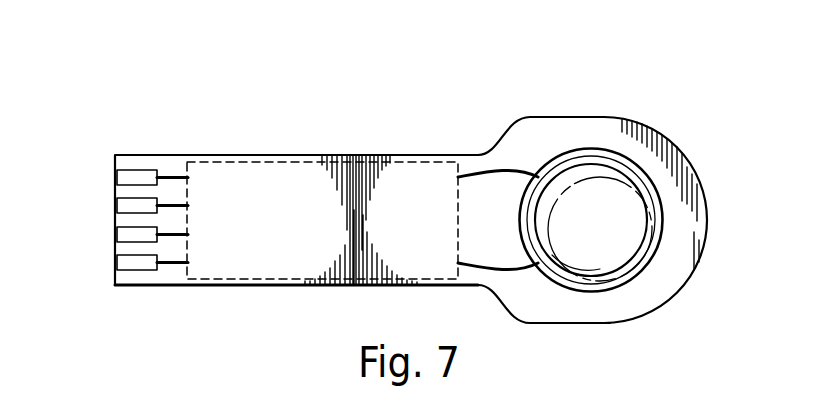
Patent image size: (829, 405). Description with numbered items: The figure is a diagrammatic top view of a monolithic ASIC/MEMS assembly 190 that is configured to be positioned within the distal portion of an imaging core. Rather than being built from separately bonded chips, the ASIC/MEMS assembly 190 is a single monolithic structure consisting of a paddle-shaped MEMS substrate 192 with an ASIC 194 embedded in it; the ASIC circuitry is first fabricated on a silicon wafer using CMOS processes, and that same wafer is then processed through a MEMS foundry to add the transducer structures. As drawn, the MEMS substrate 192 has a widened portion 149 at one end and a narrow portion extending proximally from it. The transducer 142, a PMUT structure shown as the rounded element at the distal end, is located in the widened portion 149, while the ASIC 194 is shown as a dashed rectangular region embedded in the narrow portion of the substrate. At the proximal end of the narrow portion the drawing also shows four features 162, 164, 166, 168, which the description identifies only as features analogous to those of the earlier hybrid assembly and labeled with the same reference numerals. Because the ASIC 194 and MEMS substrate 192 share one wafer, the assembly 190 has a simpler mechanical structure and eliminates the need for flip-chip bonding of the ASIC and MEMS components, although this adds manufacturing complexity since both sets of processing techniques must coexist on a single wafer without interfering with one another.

The ASIC/MEMS assembly 190 is at (285, 82).
The ASIC 194 is at (177, 163).
The contact pad 162 is at (125, 177).
The contact pad 164 is at (125, 205).
The contact pad 166 is at (125, 235).
The contact pad 168 is at (125, 263).
The MEMS substrate 192 is at (685, 155).
The transducer 142 is at (630, 262).
The widened portion 149 is at (578, 323).